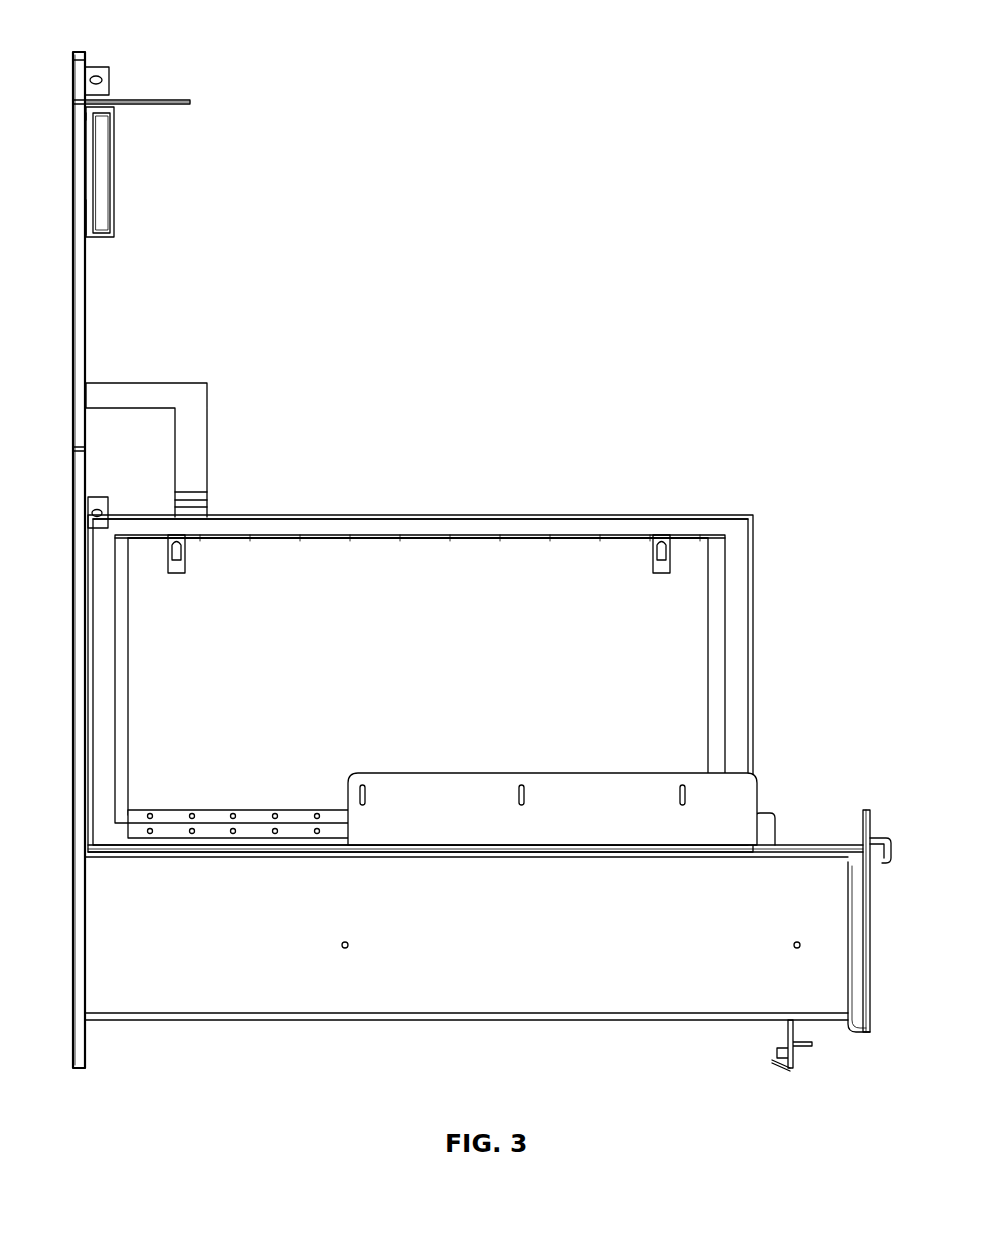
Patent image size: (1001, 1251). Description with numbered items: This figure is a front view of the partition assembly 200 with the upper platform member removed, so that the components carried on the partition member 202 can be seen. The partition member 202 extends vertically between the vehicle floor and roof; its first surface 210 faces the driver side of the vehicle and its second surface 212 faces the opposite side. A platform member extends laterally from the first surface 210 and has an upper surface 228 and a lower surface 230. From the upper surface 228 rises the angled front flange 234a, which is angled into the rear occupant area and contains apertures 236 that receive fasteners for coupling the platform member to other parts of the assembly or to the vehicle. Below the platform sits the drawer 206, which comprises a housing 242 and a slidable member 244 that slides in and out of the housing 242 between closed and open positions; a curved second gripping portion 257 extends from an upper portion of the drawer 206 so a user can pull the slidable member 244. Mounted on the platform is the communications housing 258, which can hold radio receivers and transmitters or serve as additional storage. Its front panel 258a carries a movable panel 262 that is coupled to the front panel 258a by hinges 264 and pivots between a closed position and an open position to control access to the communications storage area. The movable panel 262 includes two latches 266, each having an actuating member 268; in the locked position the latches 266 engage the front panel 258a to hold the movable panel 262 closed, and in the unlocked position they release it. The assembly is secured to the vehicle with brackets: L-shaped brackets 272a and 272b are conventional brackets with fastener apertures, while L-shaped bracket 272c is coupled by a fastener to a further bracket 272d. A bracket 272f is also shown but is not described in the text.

The partition assembly 200 is at (625, 192).
The partition member 202 is at (79, 693).
The drawer 206 is at (604, 1047).
The first surface 210 is at (85, 330).
The second surface 212 is at (73, 255).
The upper surface 228 is at (780, 826).
The lower surface 230 is at (250, 862).
The front flange 234a is at (592, 761).
The apertures 236 is at (522, 785).
The housing 242 is at (497, 1000).
The slidable member 244 is at (872, 962).
The second gripping portion 257 is at (876, 840).
The communications housing 258 is at (351, 474).
The front panel 258a is at (628, 525).
The movable panel 262 is at (420, 572).
The hinges 264 is at (210, 812).
The latches 266 is at (182, 560).
The actuating member 268 is at (663, 565).
The bracket 272a is at (96, 67).
The bracket 272b is at (96, 497).
The L-shaped bracket 272c is at (787, 1040).
The bracket 272d is at (790, 1068).
The mounting bracket 272f is at (198, 400).